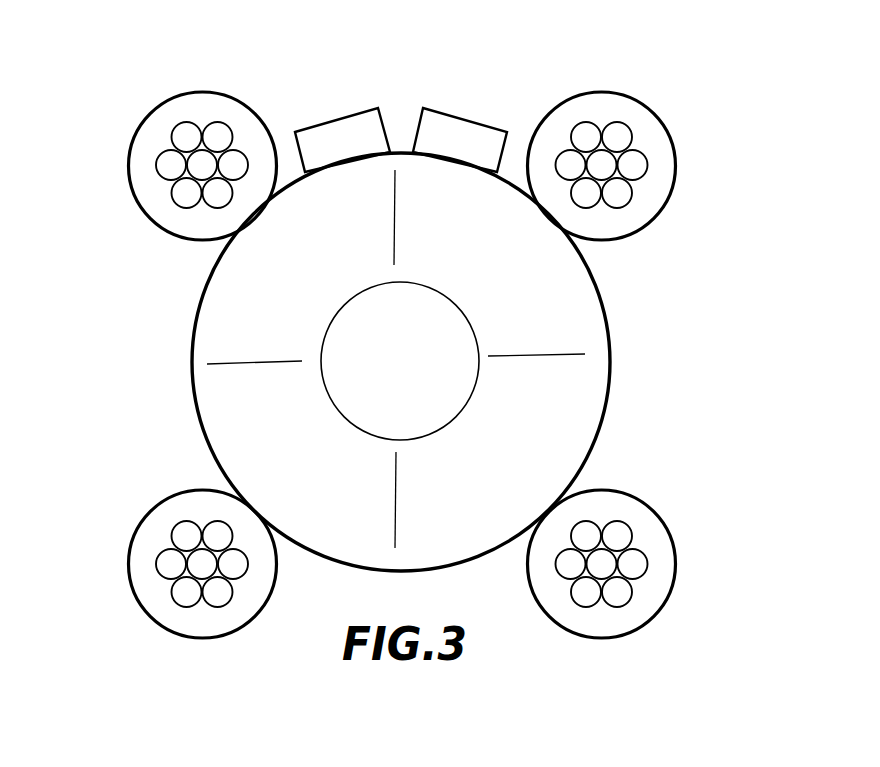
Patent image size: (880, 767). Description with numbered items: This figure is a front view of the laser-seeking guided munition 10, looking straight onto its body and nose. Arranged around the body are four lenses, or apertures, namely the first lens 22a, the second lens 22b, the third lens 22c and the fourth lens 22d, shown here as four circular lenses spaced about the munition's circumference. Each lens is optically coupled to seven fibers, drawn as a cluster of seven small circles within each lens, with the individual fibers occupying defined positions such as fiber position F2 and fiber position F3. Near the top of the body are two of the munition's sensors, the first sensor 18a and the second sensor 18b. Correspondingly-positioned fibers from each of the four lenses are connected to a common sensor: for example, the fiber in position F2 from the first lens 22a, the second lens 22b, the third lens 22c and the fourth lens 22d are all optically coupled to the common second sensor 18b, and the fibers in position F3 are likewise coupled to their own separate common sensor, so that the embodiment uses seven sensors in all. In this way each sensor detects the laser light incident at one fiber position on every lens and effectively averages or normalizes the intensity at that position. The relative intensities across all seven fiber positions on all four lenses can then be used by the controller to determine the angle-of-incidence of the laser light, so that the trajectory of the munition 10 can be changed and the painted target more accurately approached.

The guided munition 10 is at (147, 336).
The first sensor 18a is at (342, 130).
The second sensor 18b is at (459, 128).
The first lens 22a is at (670, 195).
The second lens 22b is at (147, 215).
The third lens 22c is at (148, 617).
The fourth lens 22d is at (670, 593).
The fiber position F2 is at (217, 137).
The fiber position F3 is at (233, 165).